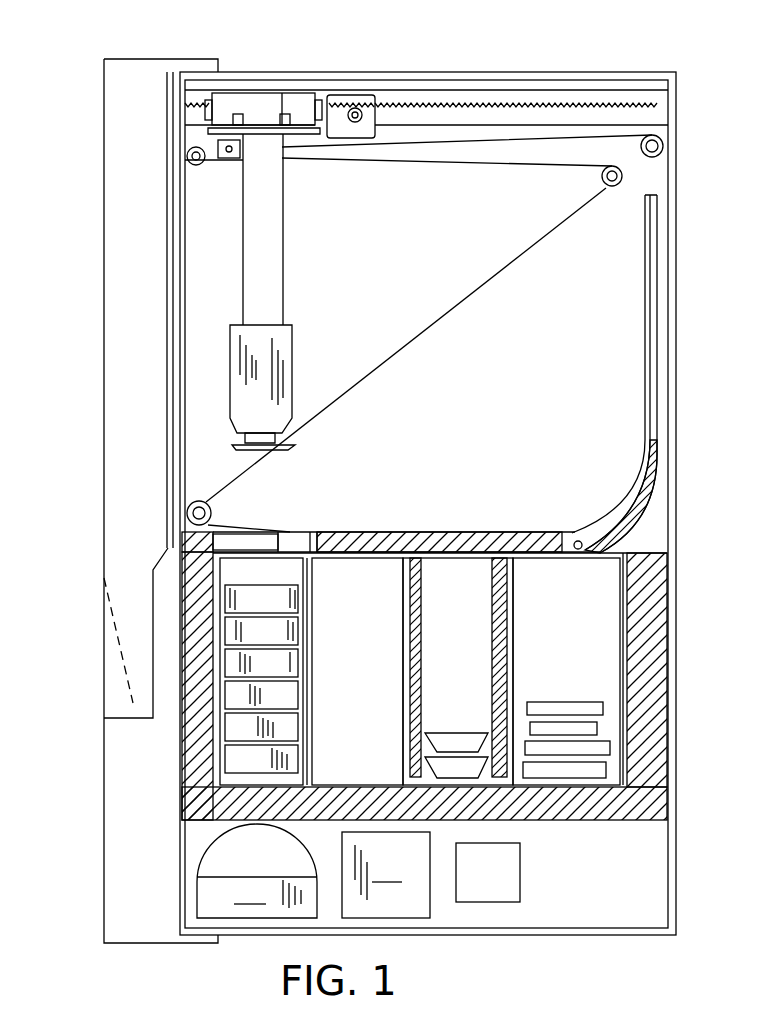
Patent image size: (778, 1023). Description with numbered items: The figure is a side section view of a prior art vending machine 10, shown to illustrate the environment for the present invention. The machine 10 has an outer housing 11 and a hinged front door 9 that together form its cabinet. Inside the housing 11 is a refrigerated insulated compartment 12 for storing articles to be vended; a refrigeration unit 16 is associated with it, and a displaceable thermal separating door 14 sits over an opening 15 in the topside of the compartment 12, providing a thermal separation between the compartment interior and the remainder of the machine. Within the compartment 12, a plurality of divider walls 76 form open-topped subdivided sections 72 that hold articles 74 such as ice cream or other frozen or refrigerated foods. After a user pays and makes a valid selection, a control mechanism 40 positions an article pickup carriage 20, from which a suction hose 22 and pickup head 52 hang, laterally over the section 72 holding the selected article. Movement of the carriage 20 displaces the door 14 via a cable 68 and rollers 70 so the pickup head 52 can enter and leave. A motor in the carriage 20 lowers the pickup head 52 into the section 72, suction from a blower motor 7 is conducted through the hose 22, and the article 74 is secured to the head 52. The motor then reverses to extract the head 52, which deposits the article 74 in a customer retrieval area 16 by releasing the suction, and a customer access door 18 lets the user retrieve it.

The blower motor 7 is at (521, 862).
The hinged front door 9 is at (102, 132).
The vending machine 10 is at (525, 56).
The outer housing 11 is at (652, 76).
The refrigerated insulated compartment 12 is at (667, 700).
The displaceable thermal separating door 14 is at (372, 532).
The opening 15 is at (272, 552).
The refrigeration unit 16 is at (120, 704).
The customer access door 18 is at (116, 640).
The article pickup carriage 20 is at (297, 118).
The suction hose 22 is at (285, 250).
The control mechanism 40 is at (386, 875).
The article pickup head 52 is at (292, 362).
The cable 68 is at (418, 340).
The rollers 70 is at (601, 180).
The subdivided sections 72 is at (513, 640).
The articles 74 is at (452, 742).
The divider walls 76 is at (492, 615).